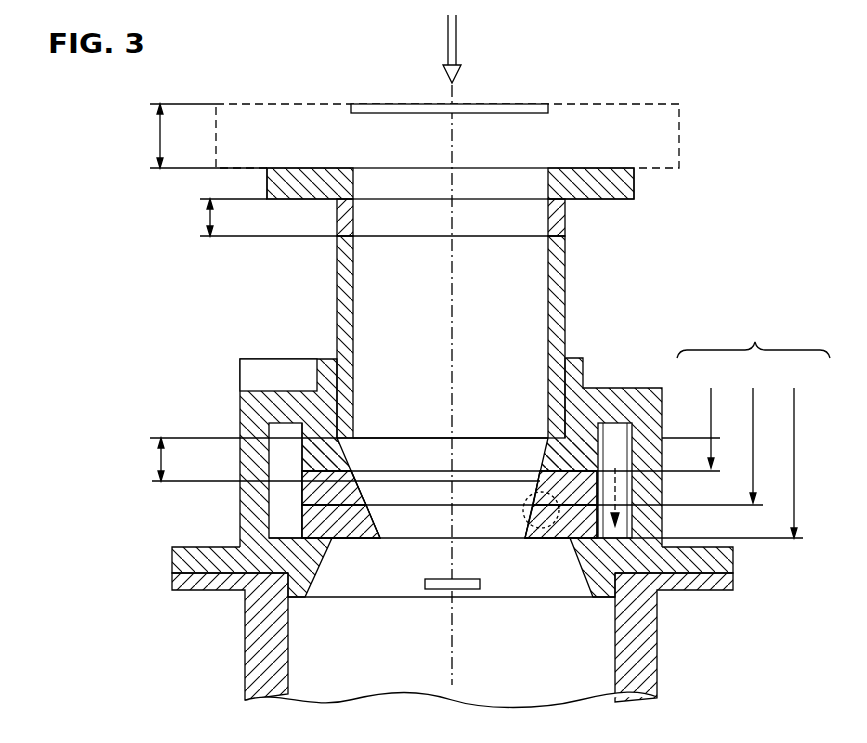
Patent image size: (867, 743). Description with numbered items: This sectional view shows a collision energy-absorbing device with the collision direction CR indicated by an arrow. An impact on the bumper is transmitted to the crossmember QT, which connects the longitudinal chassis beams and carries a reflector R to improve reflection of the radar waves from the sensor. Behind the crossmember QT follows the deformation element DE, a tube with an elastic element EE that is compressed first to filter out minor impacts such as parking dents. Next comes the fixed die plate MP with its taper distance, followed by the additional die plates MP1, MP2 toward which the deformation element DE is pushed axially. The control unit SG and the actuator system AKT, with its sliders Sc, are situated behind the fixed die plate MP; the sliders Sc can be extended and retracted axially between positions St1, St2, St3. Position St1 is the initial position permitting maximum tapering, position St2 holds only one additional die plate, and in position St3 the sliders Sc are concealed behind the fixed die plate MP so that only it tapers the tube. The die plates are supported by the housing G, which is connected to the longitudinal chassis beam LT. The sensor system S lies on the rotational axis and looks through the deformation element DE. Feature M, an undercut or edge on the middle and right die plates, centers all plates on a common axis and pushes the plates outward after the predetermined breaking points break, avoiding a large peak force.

The collision direction CR is at (447, 35).
The reflector R is at (498, 107).
The crossmember QT is at (665, 135).
The elastic element EE is at (563, 222).
The deformation element DE is at (558, 283).
The control unit SG is at (250, 372).
The fixed die plate MP is at (328, 462).
The die plate MP1 is at (318, 495).
The die plate MP2 is at (318, 527).
The actuator system AKT is at (612, 438).
The sliders Sc is at (753, 334).
The initial position St1 is at (547, 449).
The second position St2 is at (537, 433).
The third position St3 is at (511, 416).
The housing G is at (724, 560).
The longitudinal chassis beam LT is at (648, 660).
The sensor system S is at (442, 586).
The feature M is at (541, 530).